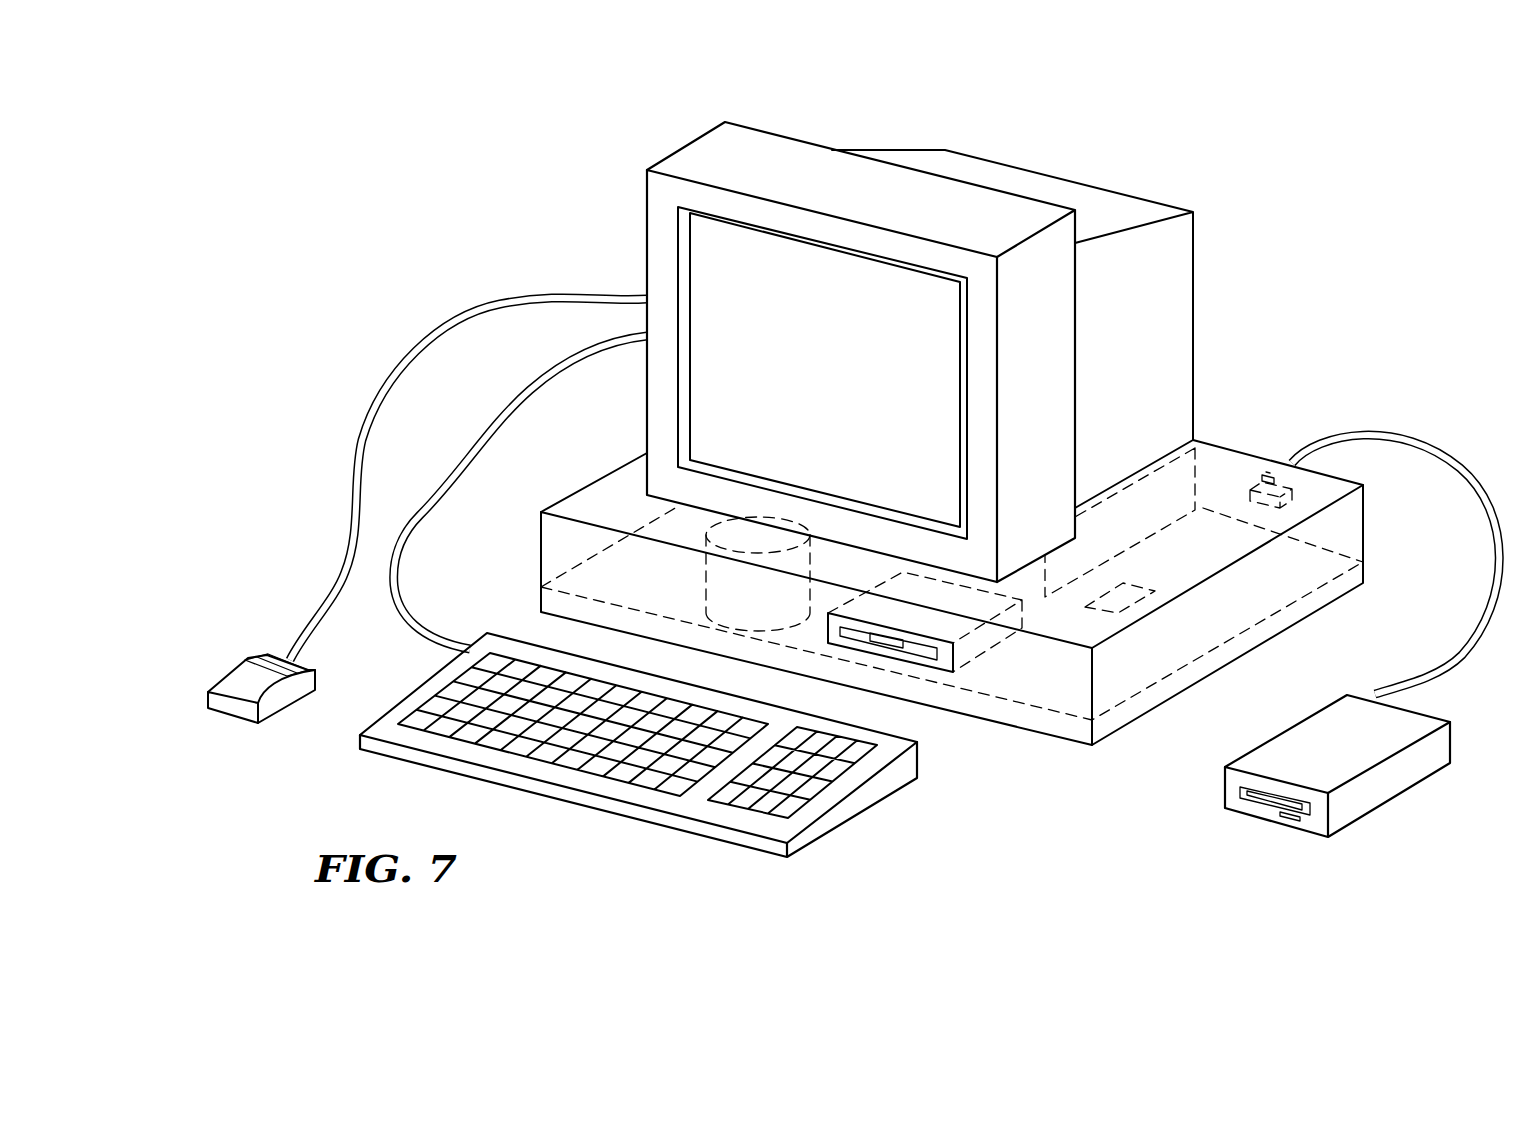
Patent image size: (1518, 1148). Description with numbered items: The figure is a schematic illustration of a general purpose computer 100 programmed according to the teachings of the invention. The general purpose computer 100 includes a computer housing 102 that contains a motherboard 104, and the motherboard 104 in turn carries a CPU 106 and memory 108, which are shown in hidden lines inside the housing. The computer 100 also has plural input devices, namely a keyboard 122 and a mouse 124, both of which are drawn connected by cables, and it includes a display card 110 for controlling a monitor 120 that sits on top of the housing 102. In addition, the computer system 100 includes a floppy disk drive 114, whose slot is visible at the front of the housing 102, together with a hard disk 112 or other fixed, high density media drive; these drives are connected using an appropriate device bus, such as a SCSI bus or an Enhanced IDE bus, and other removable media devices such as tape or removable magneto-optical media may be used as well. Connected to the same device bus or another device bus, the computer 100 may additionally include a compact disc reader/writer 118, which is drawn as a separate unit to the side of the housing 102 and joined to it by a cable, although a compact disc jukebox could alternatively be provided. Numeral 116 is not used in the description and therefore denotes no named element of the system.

The general purpose computer 100 is at (164, 524).
The computer housing 102 is at (991, 592).
The motherboard 104 is at (1395, 564).
The CPU 106 is at (1123, 629).
The memory 108 is at (1269, 450).
The display card 110 is at (1120, 495).
The hard disk 112 is at (725, 574).
The floppy disk drive 114 is at (930, 627).
The monitor 116 is at (861, 352).
The compact disc reader/writer 118 is at (1339, 767).
The monitor 120 is at (1045, 329).
The keyboard 122 is at (651, 745).
The mouse 124 is at (259, 654).